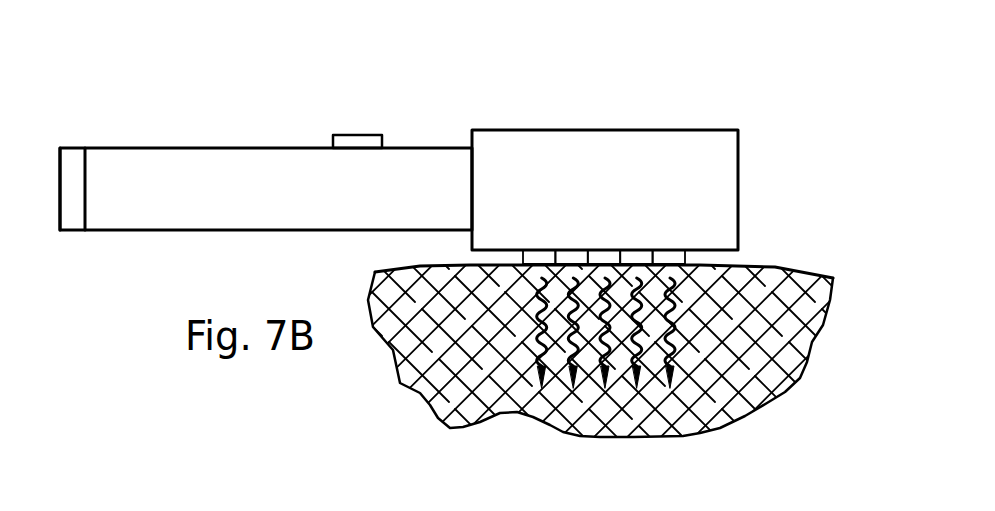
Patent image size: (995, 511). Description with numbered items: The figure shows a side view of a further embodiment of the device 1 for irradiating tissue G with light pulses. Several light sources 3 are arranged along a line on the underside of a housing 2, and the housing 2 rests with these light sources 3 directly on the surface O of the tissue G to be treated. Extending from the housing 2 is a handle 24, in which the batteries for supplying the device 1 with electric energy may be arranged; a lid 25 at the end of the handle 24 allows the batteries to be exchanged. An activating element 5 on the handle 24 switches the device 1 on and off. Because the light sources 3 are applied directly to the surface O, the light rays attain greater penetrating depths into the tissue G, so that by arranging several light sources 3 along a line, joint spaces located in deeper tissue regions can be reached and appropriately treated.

The device 1 is at (710, 100).
The housing 2 is at (693, 182).
The light sources 3 is at (668, 258).
The activating element 5 is at (352, 137).
The handle 24 is at (240, 203).
The lid 25 is at (73, 185).
The surface O is at (783, 255).
The tissue G is at (713, 367).